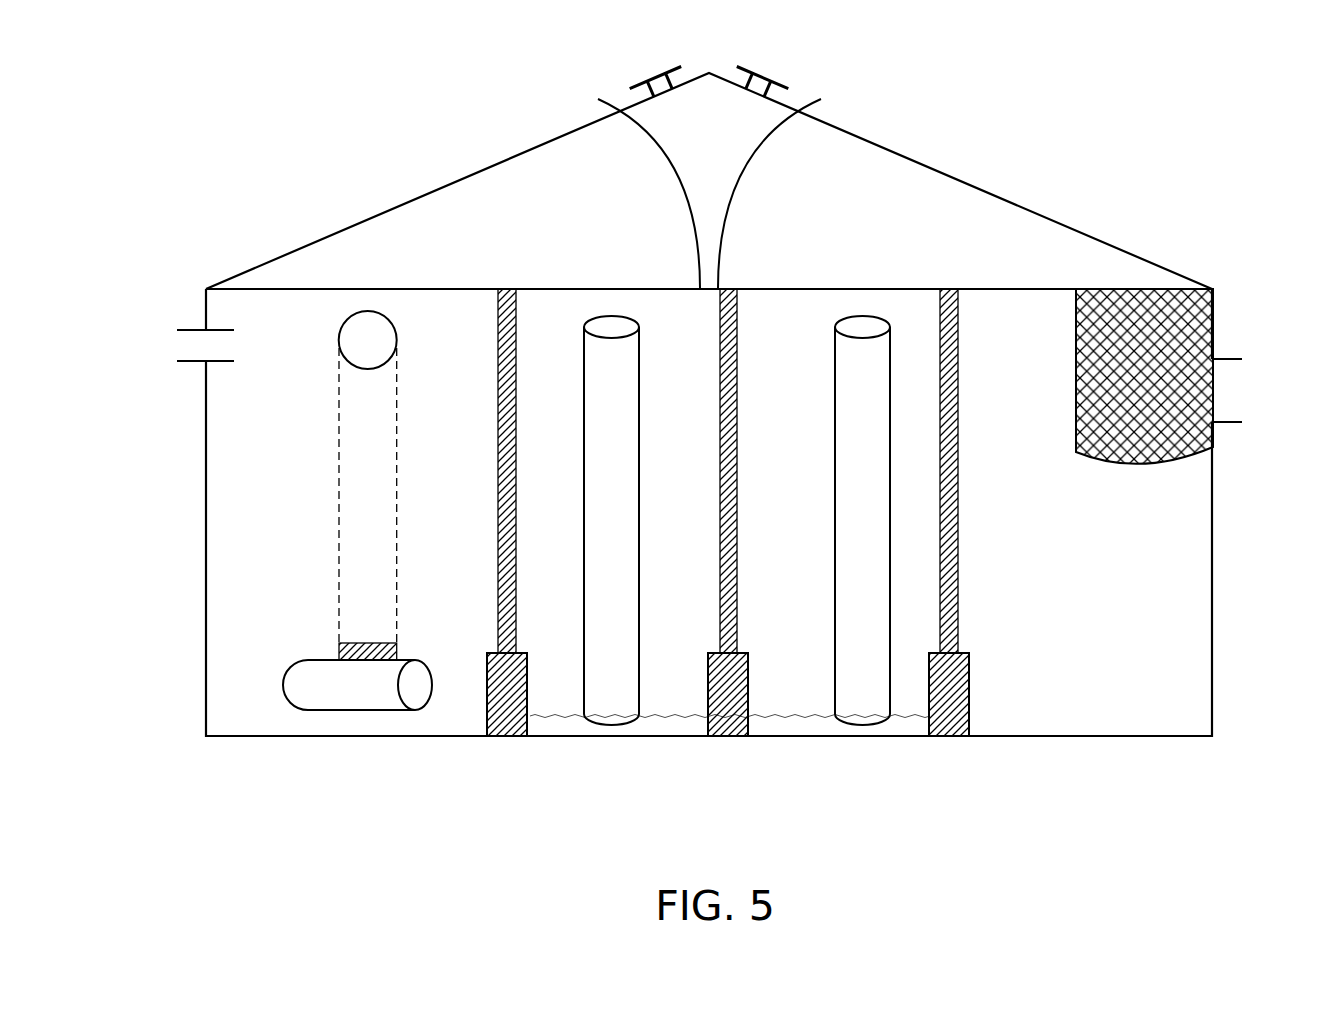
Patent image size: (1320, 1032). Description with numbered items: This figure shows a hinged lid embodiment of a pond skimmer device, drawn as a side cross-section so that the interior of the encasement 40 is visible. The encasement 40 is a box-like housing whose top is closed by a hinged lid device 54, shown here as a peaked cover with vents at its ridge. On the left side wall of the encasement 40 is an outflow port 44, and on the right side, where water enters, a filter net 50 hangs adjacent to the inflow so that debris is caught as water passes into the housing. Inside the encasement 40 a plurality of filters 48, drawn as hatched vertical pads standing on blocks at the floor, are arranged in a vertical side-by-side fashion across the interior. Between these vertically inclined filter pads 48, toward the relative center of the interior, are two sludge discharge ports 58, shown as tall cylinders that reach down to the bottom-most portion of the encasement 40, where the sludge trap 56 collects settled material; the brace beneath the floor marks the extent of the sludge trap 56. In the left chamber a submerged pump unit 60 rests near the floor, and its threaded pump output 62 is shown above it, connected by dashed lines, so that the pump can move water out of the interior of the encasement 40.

The encasement 40 is at (197, 62).
The outflow port 44 is at (178, 343).
The filters 48 is at (517, 289).
The filter net 50 is at (1203, 445).
The hinged lid device 54 is at (985, 189).
The sludge trap 56 is at (730, 556).
The sludge discharge ports 58 is at (610, 712).
The submerged pump unit 60 is at (350, 697).
The threaded pump output 62 is at (338, 340).